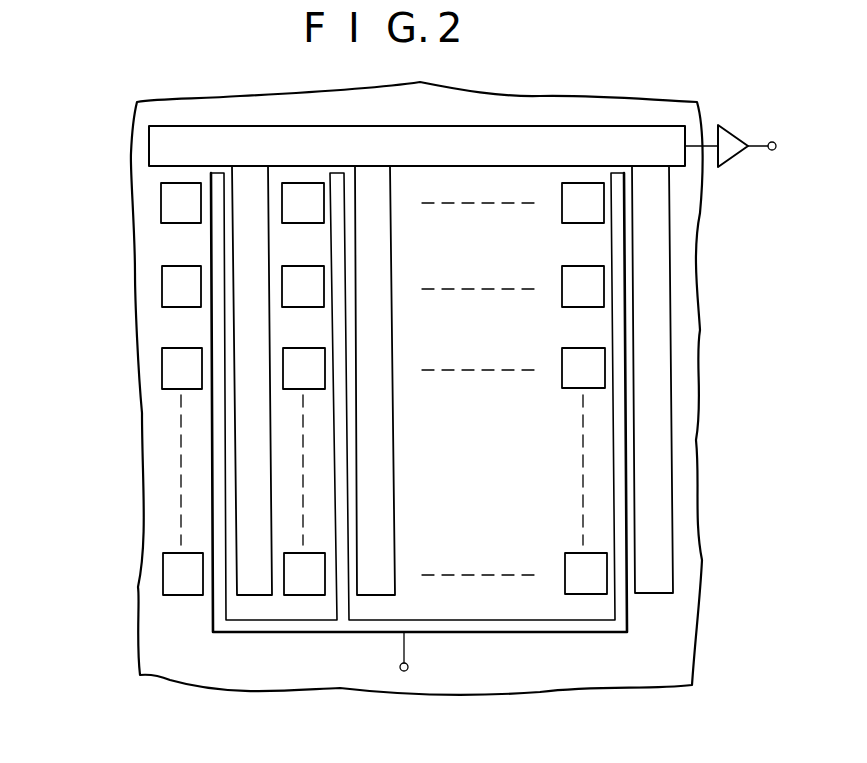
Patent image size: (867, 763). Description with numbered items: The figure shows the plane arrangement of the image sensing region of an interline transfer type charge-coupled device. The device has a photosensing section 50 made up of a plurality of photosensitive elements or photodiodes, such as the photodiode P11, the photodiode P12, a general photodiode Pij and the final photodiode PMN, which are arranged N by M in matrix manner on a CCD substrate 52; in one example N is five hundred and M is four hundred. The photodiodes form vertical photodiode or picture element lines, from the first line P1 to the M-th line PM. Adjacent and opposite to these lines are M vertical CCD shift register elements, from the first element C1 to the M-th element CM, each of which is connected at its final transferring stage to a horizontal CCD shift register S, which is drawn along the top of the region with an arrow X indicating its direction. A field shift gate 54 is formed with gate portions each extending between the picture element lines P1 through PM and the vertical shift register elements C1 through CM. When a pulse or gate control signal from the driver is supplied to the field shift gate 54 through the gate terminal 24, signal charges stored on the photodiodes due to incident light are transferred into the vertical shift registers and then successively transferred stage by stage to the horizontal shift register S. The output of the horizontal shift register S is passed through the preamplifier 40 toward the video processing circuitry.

The photosensing section 50 is at (336, 391).
The horizontal CCD shift register S is at (582, 143).
The X direction X is at (368, 107).
The preamplifier 40 is at (732, 145).
The vertical CCD shift register element C1 is at (258, 590).
The vertical CCD shift register element CM is at (657, 582).
The field shift gate 54 is at (360, 633).
The gate terminal 24 is at (408, 670).
The CCD substrate 52 is at (690, 622).
The photodiode line P1 is at (135, 455).
The photodiode P11 is at (165, 203).
The photodiode P12 is at (133, 286).
The photodiode Pij is at (317, 373).
The photodiode line PM is at (553, 456).
The photodiode PMN is at (553, 551).